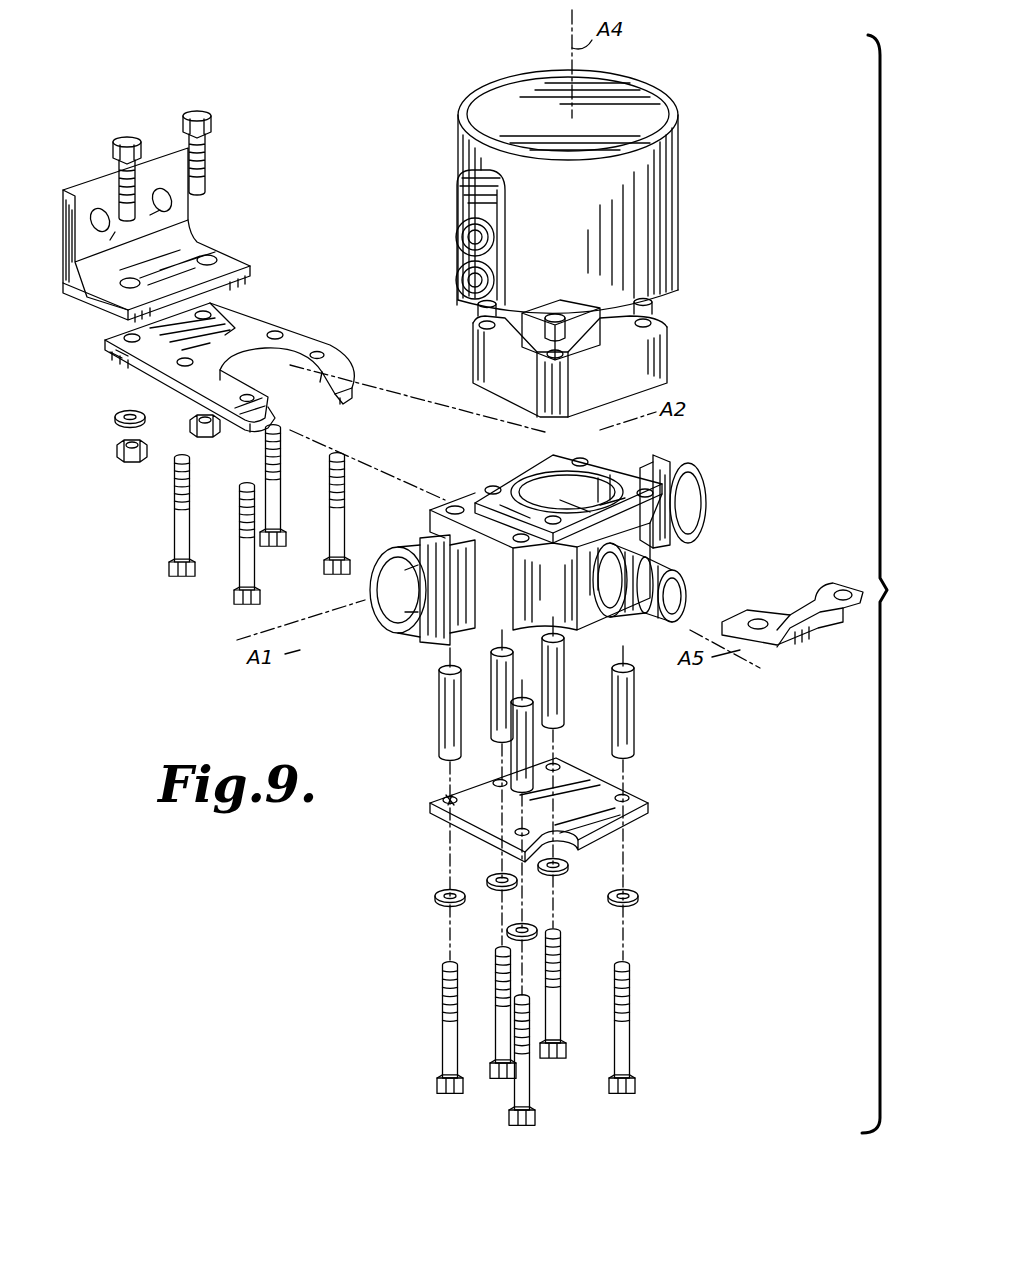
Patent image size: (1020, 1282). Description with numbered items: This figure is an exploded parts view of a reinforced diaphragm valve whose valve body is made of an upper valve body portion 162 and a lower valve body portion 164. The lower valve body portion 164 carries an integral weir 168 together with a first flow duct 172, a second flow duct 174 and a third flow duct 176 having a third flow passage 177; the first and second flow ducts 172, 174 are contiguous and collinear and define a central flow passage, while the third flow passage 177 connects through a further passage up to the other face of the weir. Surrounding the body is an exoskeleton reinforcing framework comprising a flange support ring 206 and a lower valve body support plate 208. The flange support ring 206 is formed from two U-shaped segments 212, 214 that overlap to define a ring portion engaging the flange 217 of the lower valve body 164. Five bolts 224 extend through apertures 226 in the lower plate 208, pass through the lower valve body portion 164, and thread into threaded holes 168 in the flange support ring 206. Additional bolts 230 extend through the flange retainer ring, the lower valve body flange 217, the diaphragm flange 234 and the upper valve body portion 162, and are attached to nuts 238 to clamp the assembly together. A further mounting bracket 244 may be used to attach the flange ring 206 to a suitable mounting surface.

The upper valve body portion 162 is at (650, 348).
The lower valve body portion 164 is at (610, 632).
The threaded holes 168 is at (255, 325).
The first flow duct 172 is at (398, 632).
The second flow duct 174 is at (690, 482).
The third flow duct 176 is at (685, 560).
The third flow passage 177 is at (683, 594).
The flange support ring 206 is at (118, 382).
The lower valve body support plate 208 is at (645, 812).
The U-shaped segment 212 is at (835, 625).
The U-shaped segment 214 is at (295, 336).
The flange 217 is at (505, 480).
The bolts 224 is at (500, 1050).
The apertures 226 is at (450, 798).
The additional bolts 230 is at (247, 590).
The diaphragm flange 234 is at (650, 395).
The nuts 238 is at (650, 300).
The mounting bracket 244 is at (63, 256).